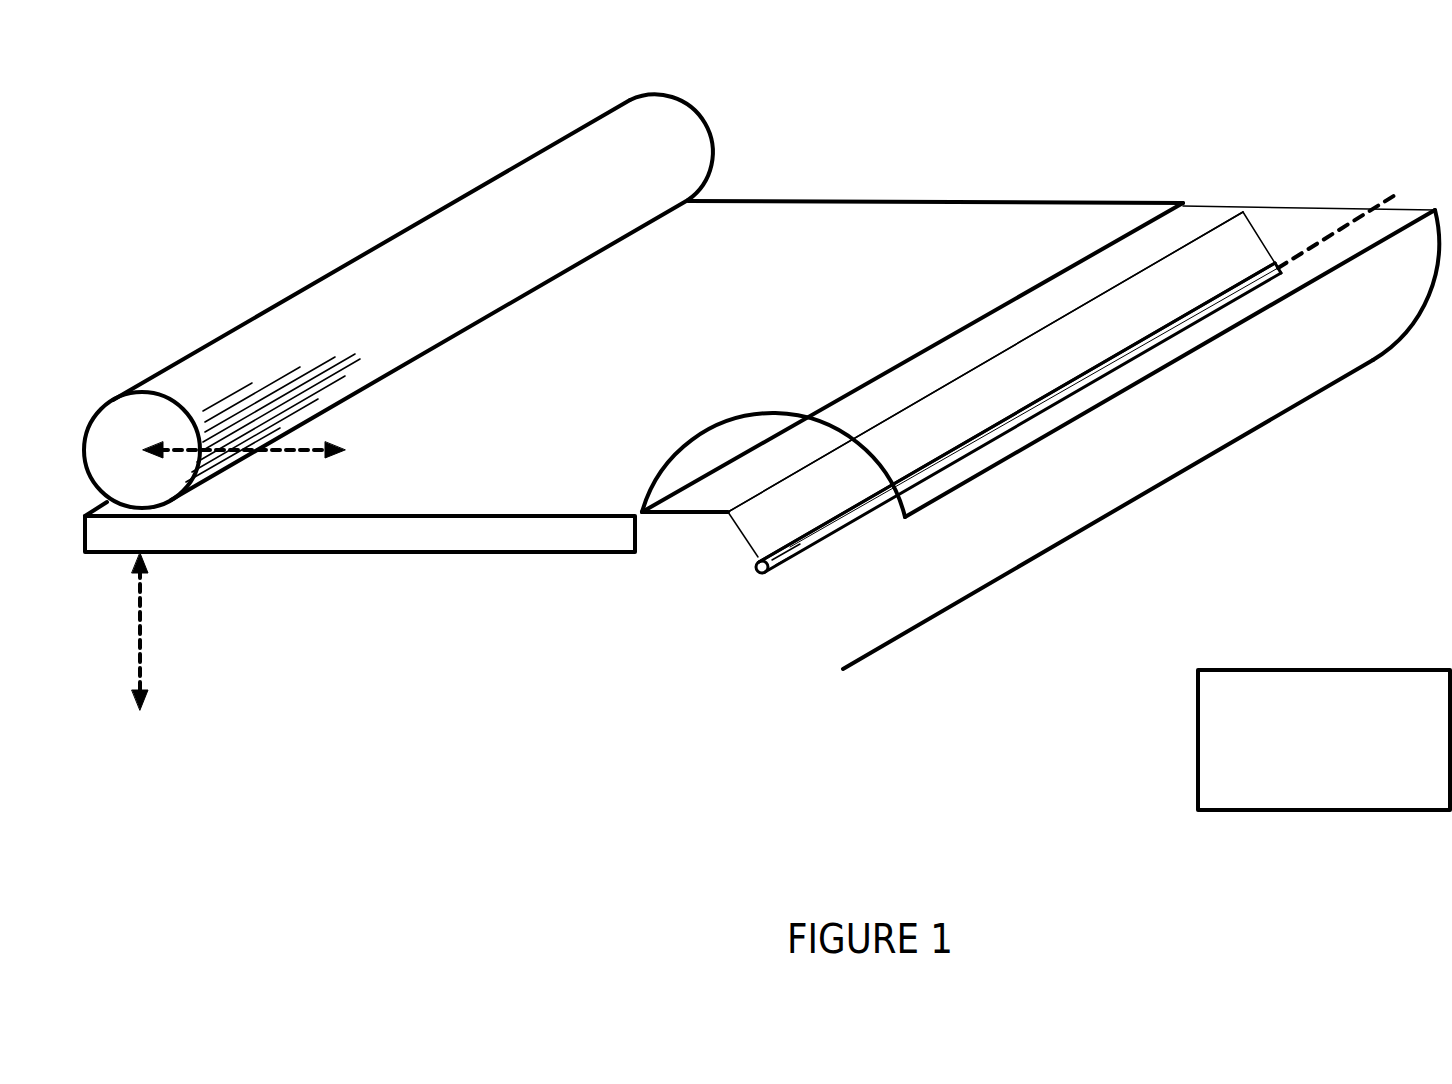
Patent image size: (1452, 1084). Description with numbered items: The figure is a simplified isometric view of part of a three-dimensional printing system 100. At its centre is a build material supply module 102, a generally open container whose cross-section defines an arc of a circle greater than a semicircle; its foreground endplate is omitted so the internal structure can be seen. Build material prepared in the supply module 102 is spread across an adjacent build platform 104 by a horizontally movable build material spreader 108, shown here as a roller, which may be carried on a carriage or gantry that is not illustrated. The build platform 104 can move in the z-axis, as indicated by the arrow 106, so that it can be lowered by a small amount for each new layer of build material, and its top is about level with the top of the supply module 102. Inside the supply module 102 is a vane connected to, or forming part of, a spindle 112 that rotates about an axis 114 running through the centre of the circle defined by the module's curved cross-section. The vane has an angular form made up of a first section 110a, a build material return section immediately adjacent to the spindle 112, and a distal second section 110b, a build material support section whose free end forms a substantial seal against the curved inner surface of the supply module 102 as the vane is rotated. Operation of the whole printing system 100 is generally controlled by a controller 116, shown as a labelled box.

The 3D printing system 100 is at (196, 151).
The build material supply module 102 is at (938, 563).
The build platform 104 is at (890, 203).
The arrow 106 is at (142, 642).
The build material spreader 108 is at (652, 117).
The first section 110a is at (1052, 343).
The second section 110b is at (957, 358).
The spindle 112 is at (755, 562).
The axis 114 is at (1366, 214).
The controller 116 is at (1233, 668).